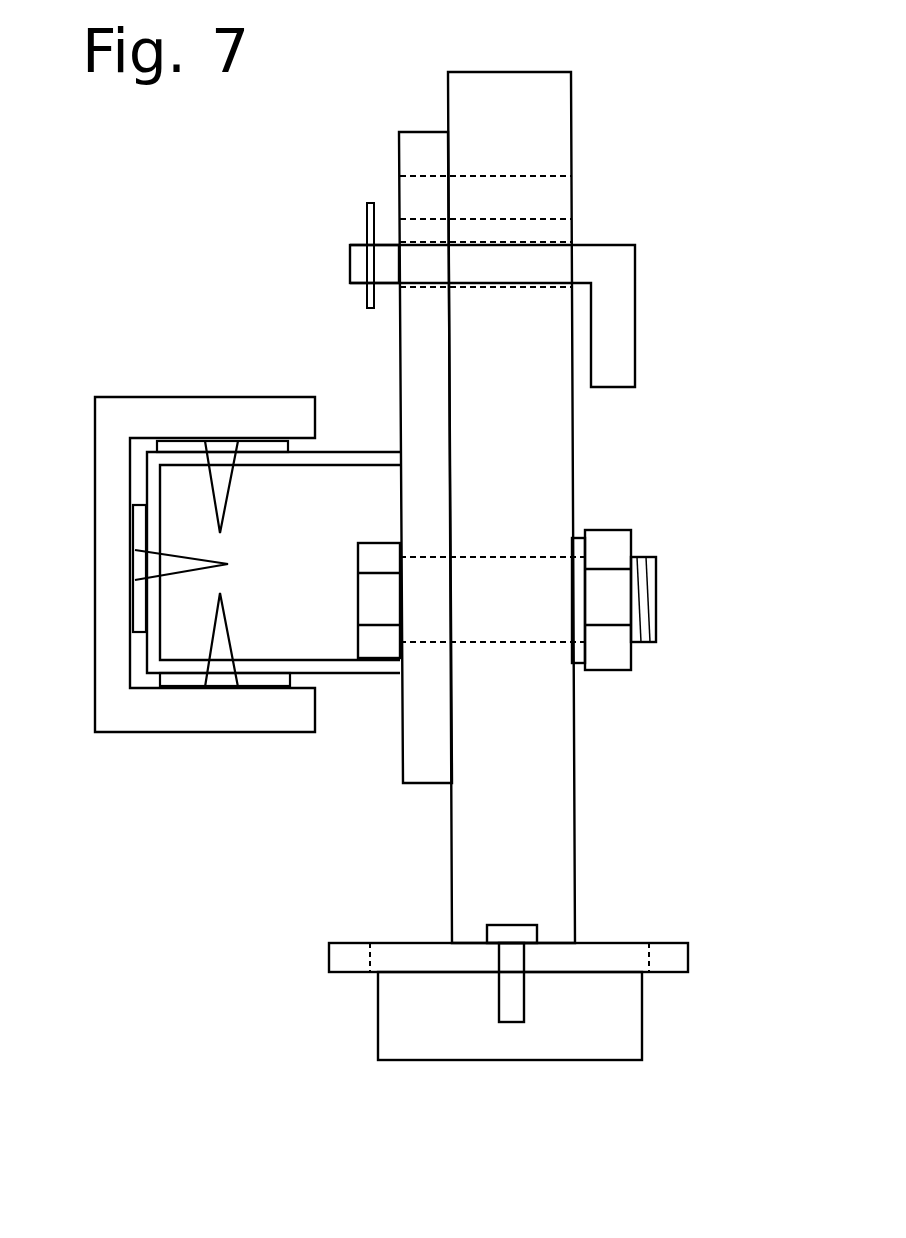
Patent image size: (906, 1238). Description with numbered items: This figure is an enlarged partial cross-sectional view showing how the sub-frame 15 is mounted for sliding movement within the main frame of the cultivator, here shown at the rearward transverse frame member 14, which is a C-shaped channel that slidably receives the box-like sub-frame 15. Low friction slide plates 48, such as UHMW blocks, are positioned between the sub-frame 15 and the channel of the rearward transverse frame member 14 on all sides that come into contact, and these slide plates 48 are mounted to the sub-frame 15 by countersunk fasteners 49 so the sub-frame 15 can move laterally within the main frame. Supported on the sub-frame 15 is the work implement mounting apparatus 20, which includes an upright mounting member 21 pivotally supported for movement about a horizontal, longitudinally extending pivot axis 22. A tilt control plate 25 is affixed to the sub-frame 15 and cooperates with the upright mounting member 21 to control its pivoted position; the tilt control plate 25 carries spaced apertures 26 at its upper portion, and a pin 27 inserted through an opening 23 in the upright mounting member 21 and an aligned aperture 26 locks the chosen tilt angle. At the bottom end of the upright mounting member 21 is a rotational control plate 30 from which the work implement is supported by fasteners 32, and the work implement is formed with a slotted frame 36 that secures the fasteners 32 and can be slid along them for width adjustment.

The work implement mounting apparatus 20 is at (632, 74).
The upright mounting member 21 is at (563, 495).
The pivot axis 22 is at (657, 603).
The opening 23 is at (570, 190).
The tilt control plate 25 is at (413, 153).
The apertures 26 is at (400, 192).
The pin 27 is at (637, 310).
The rearward transverse frame member 14 is at (238, 410).
The sub-frame 15 is at (328, 675).
The slide plates 48 is at (168, 443).
The countersunk fasteners 49 is at (220, 600).
The rotational control plate 30 is at (678, 942).
The fasteners 32 is at (519, 925).
The slotted frame 36 is at (643, 1022).